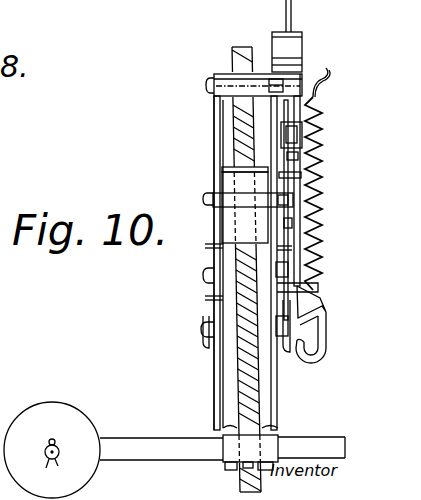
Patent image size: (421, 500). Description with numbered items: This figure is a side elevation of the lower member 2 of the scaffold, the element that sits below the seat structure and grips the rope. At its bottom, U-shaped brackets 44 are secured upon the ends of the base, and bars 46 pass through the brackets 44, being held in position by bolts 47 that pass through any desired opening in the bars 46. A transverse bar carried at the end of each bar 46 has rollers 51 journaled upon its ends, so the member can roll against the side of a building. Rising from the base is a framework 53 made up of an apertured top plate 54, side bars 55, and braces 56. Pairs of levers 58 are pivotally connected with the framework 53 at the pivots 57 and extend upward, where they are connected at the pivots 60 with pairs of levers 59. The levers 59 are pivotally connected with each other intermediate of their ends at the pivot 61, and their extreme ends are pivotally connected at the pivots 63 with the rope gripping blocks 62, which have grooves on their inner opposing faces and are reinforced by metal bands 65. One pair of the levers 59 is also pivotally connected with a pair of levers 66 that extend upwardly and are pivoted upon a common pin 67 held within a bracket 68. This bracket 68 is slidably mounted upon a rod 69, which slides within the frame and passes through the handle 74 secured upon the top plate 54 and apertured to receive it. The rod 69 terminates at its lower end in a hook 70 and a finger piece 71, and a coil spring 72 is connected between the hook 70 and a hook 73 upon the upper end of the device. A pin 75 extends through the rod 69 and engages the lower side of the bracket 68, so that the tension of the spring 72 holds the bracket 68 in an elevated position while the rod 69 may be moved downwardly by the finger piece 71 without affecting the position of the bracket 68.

The lower member 2 is at (228, 252).
The U-shaped bracket 44 is at (233, 450).
The bar 46 is at (145, 448).
The bolt 47 is at (254, 422).
The roller 51 is at (55, 415).
The framework 53 is at (212, 140).
The top plate 54 is at (208, 82).
The side bar 55 is at (218, 113).
The brace 56 is at (206, 345).
The pivot 57 is at (200, 329).
The lever 58 is at (216, 297).
The lever 59 is at (216, 242).
The pivot 60 is at (203, 275).
The pivot 61 is at (292, 223).
The rope gripping block 62 is at (228, 173).
The pivot 63 is at (204, 199).
The band 65 is at (245, 207).
The lever 66 is at (284, 175).
The pin 67 is at (230, 152).
The bracket 68 is at (319, 123).
The rod 69 is at (291, 19).
The hook 70 is at (324, 309).
The finger piece 71 is at (331, 352).
The coil spring 72 is at (292, 162).
The hook 73 is at (331, 63).
The handle 74 is at (279, 53).
The pin 75 is at (300, 151).